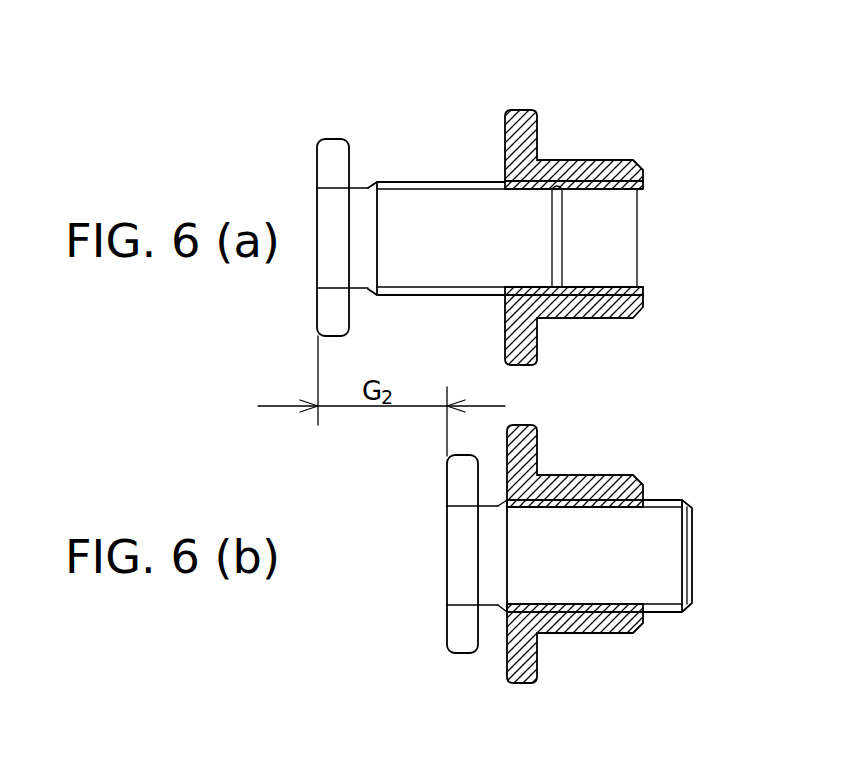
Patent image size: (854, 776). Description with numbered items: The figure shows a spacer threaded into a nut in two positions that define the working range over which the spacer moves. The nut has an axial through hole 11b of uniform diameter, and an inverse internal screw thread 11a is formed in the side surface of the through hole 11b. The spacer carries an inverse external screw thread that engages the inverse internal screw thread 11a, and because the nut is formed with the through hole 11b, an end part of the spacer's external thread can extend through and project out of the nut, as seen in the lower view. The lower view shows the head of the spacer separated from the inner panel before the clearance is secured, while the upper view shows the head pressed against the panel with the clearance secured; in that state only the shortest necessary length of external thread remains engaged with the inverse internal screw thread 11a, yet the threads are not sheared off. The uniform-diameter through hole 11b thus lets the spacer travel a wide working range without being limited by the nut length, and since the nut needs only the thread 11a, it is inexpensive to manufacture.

The inverse internal screw thread 11a is at (602, 188).
The through hole 11b is at (577, 223).